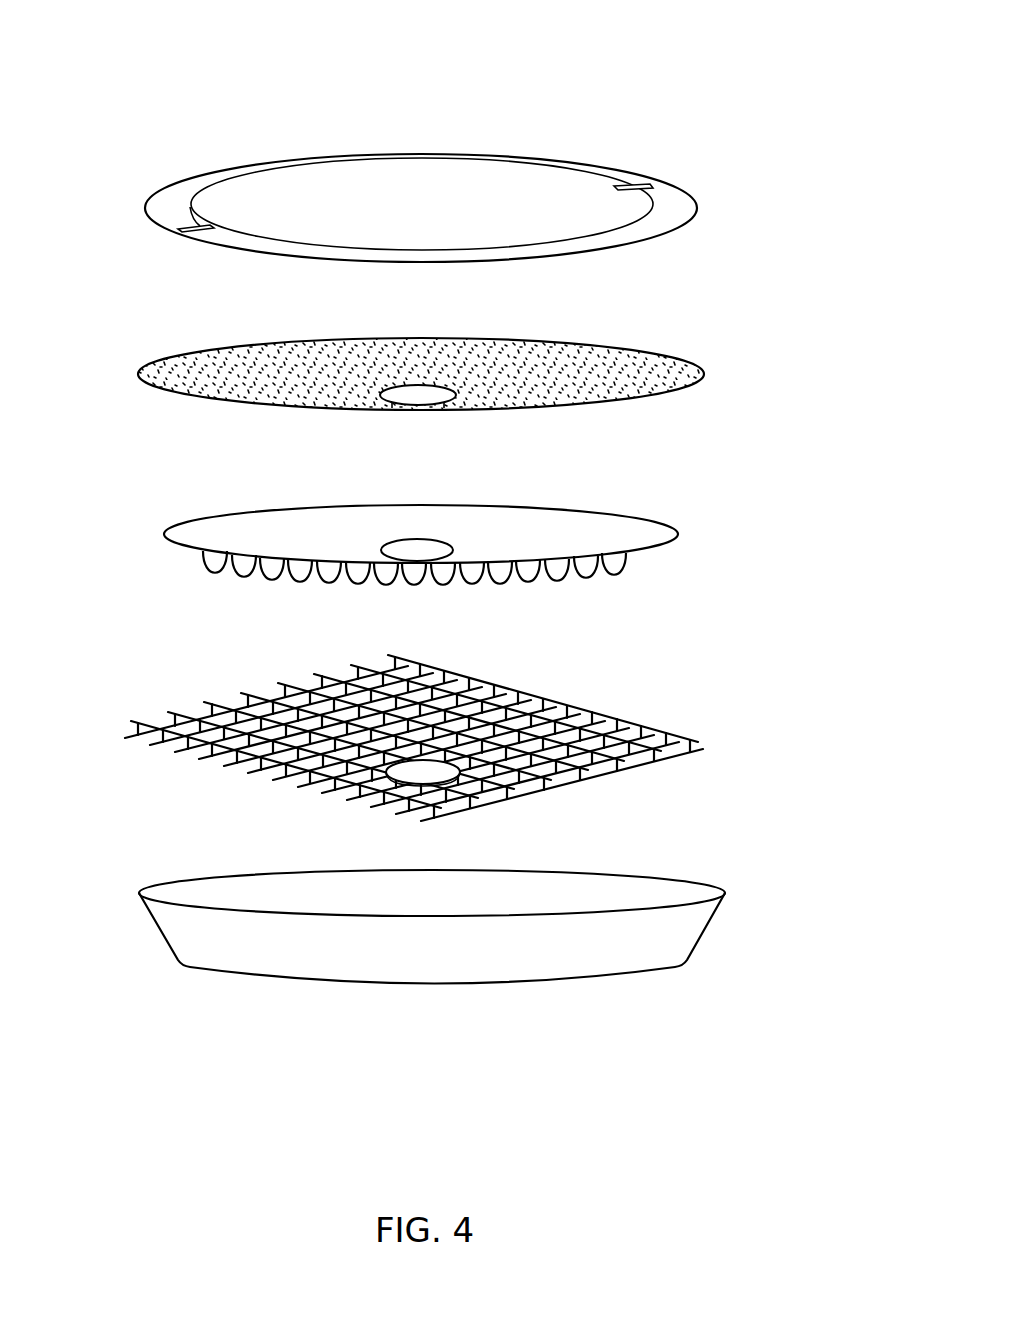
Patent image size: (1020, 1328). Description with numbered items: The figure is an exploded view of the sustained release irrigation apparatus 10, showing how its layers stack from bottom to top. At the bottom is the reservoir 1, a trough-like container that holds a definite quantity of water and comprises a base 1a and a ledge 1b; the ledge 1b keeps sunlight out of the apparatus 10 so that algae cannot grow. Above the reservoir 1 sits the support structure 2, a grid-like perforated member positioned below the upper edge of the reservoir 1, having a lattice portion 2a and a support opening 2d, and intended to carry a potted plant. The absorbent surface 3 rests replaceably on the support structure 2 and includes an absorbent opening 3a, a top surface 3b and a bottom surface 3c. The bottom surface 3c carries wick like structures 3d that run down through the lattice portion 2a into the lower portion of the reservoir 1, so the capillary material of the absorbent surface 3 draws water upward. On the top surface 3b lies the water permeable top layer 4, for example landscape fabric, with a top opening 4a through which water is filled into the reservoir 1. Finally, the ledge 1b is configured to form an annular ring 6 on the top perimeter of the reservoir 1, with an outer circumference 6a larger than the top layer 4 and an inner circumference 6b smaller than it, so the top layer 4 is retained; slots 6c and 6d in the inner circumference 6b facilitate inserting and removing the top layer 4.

The sustained release irrigation apparatus 10 is at (490, 64).
The annular ring 6 is at (372, 160).
The outer circumference 6a is at (553, 156).
The inner circumference 6b is at (252, 178).
The slot 6c is at (635, 185).
The slot 6d is at (178, 222).
The water permeable top layer 4 is at (565, 345).
The top opening 4a is at (425, 387).
The absorbent surface 3 is at (566, 508).
The absorbent opening 3a is at (432, 545).
The top surface 3b is at (295, 522).
The bottom surface 3c is at (200, 556).
The wick like structures 3d is at (640, 565).
The support structure 2 is at (712, 738).
The lattice portion 2a is at (662, 705).
The support opening 2d is at (410, 772).
The reservoir 1 is at (706, 933).
The base 1a is at (543, 966).
The ledge 1b is at (205, 878).